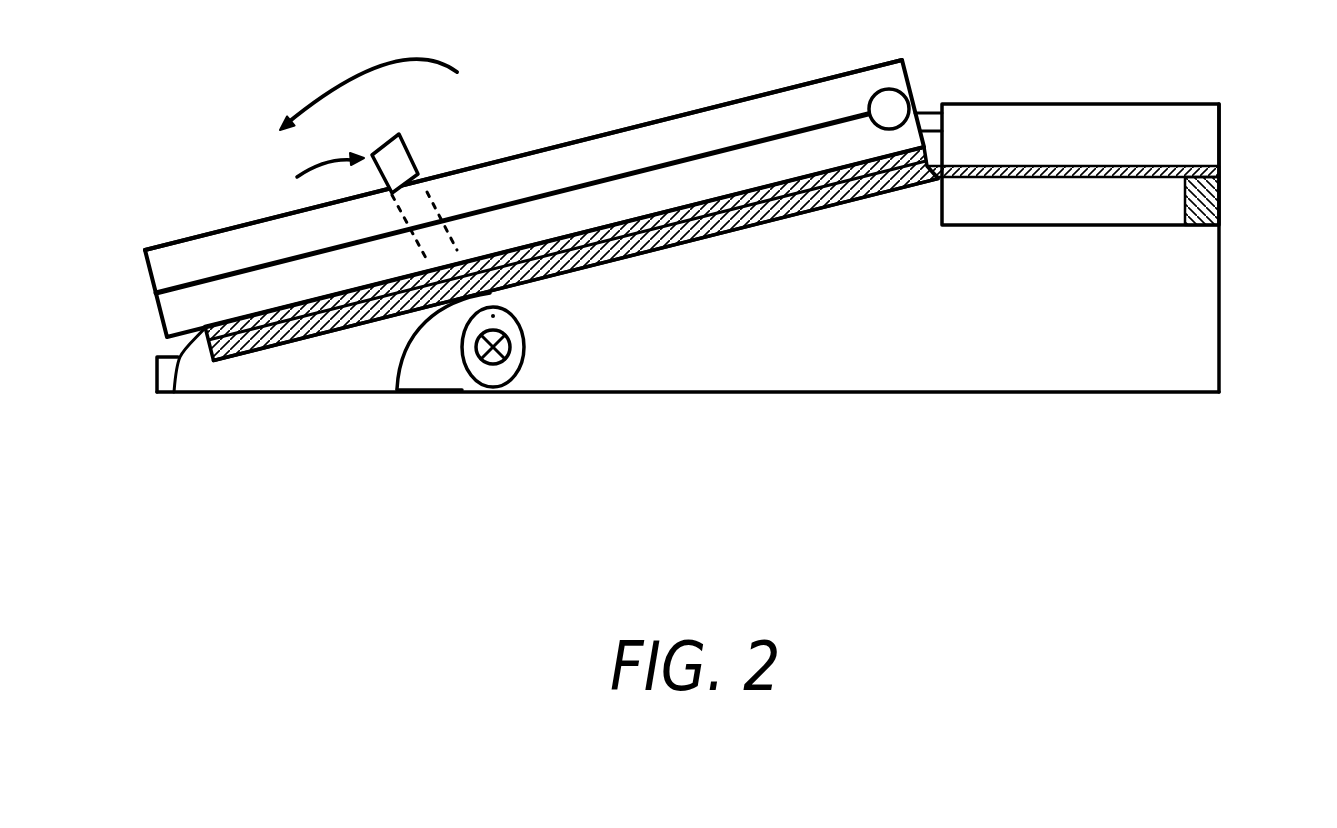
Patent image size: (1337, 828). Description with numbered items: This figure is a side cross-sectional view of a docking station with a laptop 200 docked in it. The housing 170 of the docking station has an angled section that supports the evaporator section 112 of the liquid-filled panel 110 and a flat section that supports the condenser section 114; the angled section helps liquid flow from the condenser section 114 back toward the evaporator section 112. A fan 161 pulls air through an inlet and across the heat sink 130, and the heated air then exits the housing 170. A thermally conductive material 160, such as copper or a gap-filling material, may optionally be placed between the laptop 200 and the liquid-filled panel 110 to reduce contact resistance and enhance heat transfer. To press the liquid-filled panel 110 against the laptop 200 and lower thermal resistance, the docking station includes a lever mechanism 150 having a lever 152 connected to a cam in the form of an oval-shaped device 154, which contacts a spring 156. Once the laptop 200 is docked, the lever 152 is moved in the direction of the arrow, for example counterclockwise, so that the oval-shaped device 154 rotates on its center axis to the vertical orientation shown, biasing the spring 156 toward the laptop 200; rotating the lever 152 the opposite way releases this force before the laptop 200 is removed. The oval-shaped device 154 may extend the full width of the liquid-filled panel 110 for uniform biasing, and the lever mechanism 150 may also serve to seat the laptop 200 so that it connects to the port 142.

The laptop 200 is at (680, 112).
The lever mechanism 150 is at (534, 198).
The lever 152 is at (417, 158).
The port 142 is at (928, 112).
The evaporator section 112 is at (740, 231).
The liquid-filled panel 110 is at (887, 191).
The condenser section 114 is at (1219, 172).
The heat sink 130 is at (1103, 214).
The fan 161 is at (1219, 215).
The housing 170 is at (905, 382).
The thermally conductive material 160 is at (157, 392).
The spring 156 is at (517, 294).
The oval-shaped device 154 is at (525, 348).